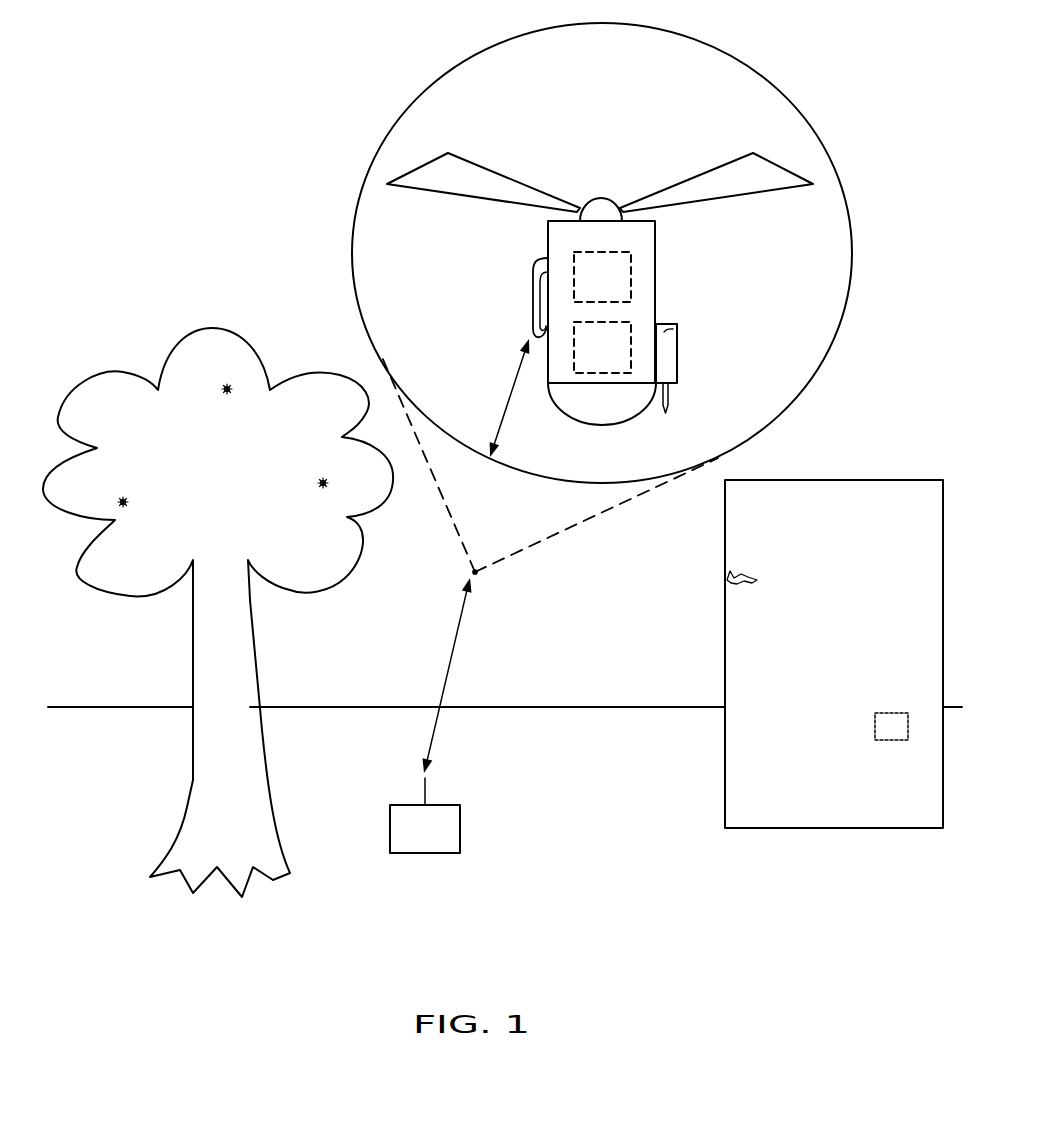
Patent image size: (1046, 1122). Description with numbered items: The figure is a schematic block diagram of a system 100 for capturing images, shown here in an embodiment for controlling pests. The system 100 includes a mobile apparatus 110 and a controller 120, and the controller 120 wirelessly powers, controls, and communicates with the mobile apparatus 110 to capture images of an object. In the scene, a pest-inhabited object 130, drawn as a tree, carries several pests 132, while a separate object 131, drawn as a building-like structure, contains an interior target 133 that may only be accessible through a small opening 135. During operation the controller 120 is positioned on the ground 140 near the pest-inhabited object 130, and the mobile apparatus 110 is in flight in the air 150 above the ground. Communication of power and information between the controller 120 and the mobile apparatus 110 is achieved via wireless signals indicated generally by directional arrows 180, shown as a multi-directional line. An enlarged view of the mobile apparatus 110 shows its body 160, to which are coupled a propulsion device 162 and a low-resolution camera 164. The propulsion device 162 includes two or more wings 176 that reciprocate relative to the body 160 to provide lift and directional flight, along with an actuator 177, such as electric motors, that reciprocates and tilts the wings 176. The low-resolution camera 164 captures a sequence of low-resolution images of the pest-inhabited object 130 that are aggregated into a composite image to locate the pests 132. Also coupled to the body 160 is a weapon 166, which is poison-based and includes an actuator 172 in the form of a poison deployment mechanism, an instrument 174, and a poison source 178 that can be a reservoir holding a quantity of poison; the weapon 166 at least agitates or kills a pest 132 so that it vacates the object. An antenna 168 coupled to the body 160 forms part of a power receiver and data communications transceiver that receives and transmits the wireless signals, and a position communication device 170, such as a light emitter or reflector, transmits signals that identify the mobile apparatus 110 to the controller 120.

The system 100 is at (276, 104).
The mobile apparatus 110 is at (600, 323).
The controller 120 is at (370, 828).
The pest-inhabited object 130 is at (145, 350).
The object 131 is at (705, 614).
The pests 132 is at (224, 395).
The target 133 is at (890, 742).
The small opening 135 is at (737, 573).
The ground 140 is at (142, 765).
The air 150 is at (351, 637).
The body 160 is at (642, 240).
The propulsion device 162 is at (594, 180).
The low-resolution camera 164 is at (604, 440).
The weapon 166 is at (702, 355).
The antenna 168 is at (532, 287).
The position communication device 170 is at (622, 278).
The actuator 172 is at (670, 335).
The instrument 174 is at (670, 412).
The wings 176 is at (483, 175).
The actuator 177 is at (605, 202).
The poison source 178 is at (595, 373).
The directional arrows 180 is at (500, 420).